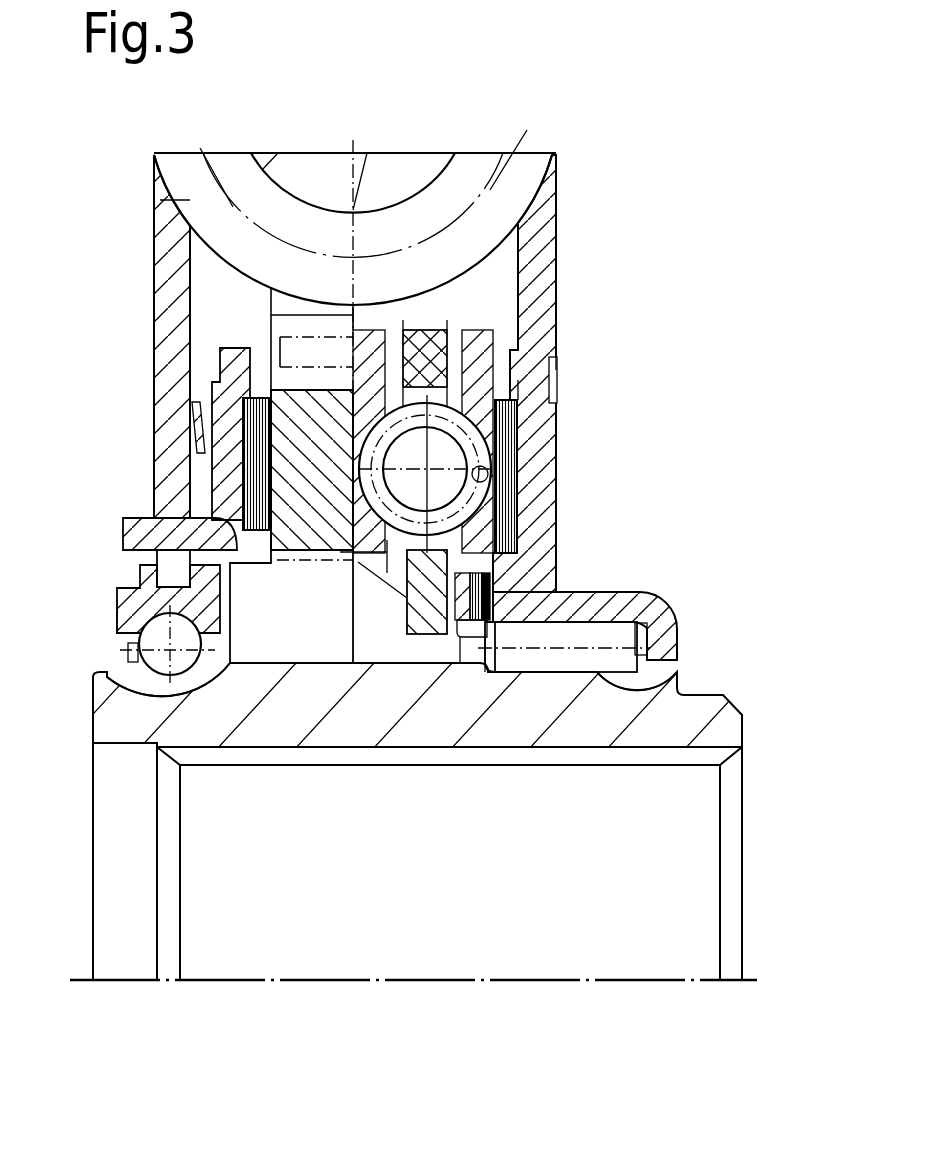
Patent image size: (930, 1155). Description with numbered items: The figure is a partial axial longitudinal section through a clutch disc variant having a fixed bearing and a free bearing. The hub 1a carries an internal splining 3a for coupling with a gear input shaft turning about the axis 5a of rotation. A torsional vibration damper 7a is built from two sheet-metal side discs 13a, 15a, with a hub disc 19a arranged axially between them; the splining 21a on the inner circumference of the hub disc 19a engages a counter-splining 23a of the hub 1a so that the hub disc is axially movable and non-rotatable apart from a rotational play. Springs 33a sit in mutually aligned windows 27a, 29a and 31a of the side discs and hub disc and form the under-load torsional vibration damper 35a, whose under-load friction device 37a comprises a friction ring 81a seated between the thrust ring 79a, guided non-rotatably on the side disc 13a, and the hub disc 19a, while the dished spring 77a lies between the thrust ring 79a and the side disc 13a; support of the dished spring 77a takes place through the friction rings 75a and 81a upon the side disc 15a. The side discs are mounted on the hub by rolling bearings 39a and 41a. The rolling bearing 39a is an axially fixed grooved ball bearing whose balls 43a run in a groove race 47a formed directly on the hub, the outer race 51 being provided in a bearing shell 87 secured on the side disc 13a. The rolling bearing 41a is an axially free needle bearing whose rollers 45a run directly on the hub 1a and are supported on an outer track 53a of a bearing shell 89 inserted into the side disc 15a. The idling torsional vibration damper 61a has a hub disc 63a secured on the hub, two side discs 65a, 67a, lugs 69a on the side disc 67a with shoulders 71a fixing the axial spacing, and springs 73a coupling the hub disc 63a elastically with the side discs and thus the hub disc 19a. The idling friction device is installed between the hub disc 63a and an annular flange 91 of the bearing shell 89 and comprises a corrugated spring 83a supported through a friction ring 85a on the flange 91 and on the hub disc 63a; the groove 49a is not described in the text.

The hub 1a is at (258, 730).
The internal splining 3a is at (340, 758).
The axis of rotation 5a is at (757, 978).
The torsional vibration damper 7a is at (620, 185).
The side disc 13a is at (165, 252).
The side disc 15a is at (543, 292).
The hub disc 19a is at (270, 320).
The splining 21a is at (280, 650).
The counter-splining 23a is at (117, 702).
The window 27a is at (160, 200).
The window 29a is at (556, 190).
The window 31a is at (333, 158).
The spring 33a is at (160, 180).
The under-load torsional vibration damper 35a is at (527, 132).
The under-load friction device 37a is at (148, 332).
The rolling bearing 39a is at (108, 628).
The rolling bearing 41a is at (693, 630).
The balls 43a is at (127, 643).
The rollers 45a is at (598, 625).
The groove race 47a is at (107, 672).
The groove 49a is at (670, 685).
The outer race 51 is at (110, 630).
The outer track 53a is at (660, 615).
The idling torsional vibration damper 61a is at (595, 392).
The hub disc 63a is at (420, 640).
The side disc 65a is at (355, 312).
The side disc 67a is at (553, 352).
The lugs 69a is at (405, 330).
The shoulders 71a is at (452, 330).
The springs 73a is at (462, 462).
The friction ring 75a is at (510, 525).
The dished spring 77a is at (225, 378).
The thrust ring 79a is at (195, 412).
The friction ring 81a is at (242, 470).
The corrugated spring 83a is at (465, 655).
The friction ring 85a is at (465, 562).
The bearing shell 87 is at (133, 595).
The bearing shell 89 is at (642, 602).
The annular flange 91 is at (480, 600).